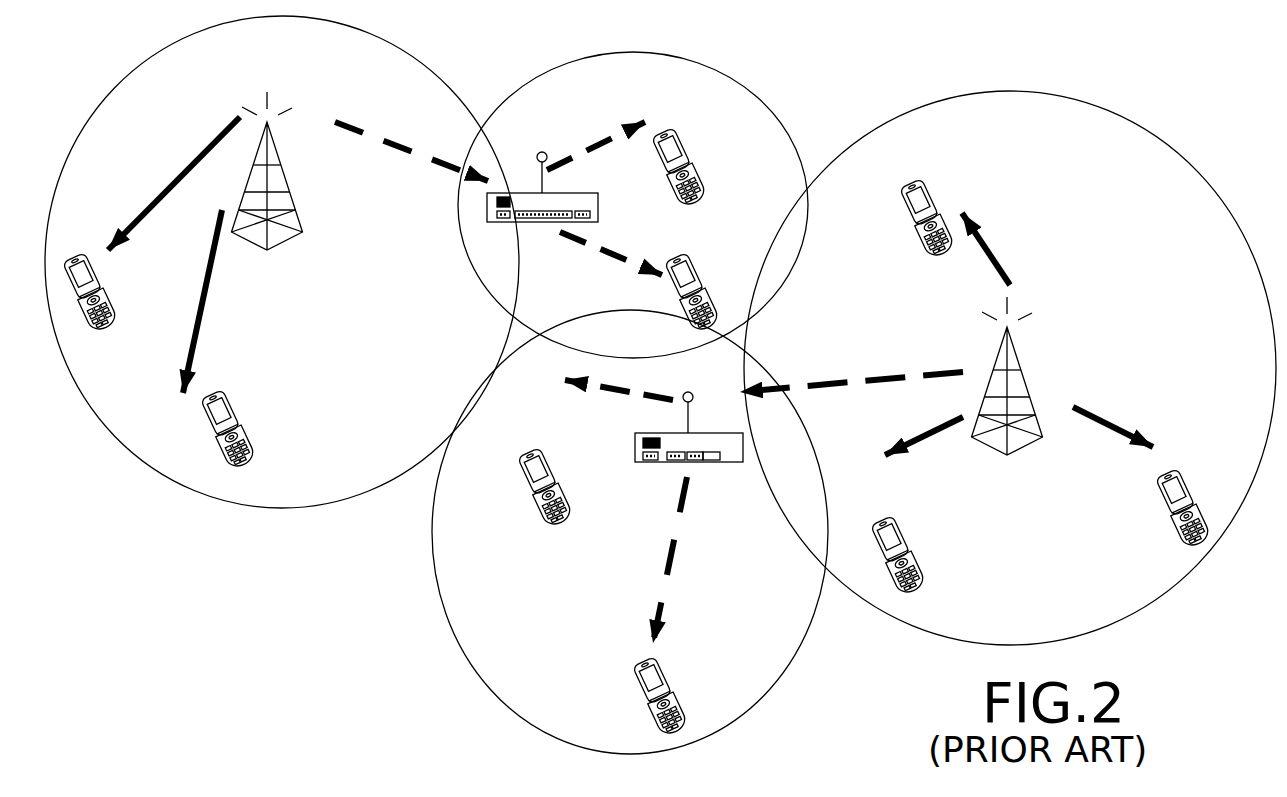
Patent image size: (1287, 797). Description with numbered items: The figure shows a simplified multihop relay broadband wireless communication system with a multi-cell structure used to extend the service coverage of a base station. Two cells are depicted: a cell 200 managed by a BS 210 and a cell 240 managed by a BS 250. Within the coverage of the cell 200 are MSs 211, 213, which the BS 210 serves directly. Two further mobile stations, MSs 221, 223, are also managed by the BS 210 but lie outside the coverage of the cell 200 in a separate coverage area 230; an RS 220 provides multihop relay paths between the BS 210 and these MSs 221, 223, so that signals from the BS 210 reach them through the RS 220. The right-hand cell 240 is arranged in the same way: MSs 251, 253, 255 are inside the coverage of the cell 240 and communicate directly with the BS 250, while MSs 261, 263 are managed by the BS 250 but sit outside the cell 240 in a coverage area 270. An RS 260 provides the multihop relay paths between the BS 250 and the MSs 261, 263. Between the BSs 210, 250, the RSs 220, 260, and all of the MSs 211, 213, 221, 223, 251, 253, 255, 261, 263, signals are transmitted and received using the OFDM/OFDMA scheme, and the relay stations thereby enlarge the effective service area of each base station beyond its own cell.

The cell 200 is at (282, 262).
The BS 210 is at (287, 175).
The MS 211 is at (72, 254).
The MS 213 is at (220, 393).
The RS 220 is at (520, 222).
The MS 221 is at (687, 253).
The MS 223 is at (675, 128).
The coverage area 230 is at (633, 205).
The cell 240 is at (1010, 368).
The BS 250 is at (1030, 380).
The MS 251 is at (917, 180).
The MS 253 is at (1170, 467).
The MS 255 is at (880, 513).
The RS 260 is at (645, 462).
The MS 261 is at (538, 447).
The MS 263 is at (653, 657).
The coverage area 270 is at (630, 532).